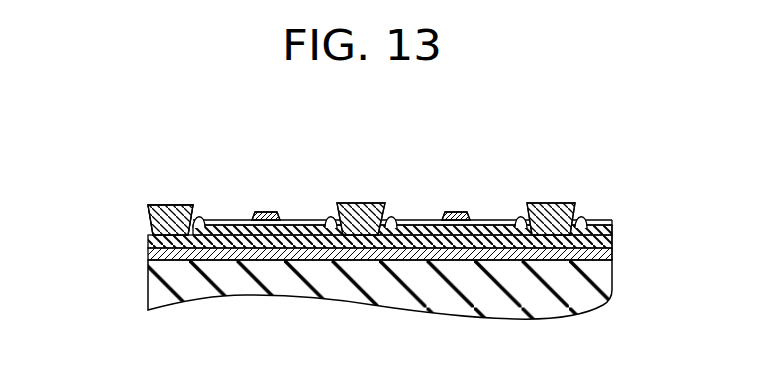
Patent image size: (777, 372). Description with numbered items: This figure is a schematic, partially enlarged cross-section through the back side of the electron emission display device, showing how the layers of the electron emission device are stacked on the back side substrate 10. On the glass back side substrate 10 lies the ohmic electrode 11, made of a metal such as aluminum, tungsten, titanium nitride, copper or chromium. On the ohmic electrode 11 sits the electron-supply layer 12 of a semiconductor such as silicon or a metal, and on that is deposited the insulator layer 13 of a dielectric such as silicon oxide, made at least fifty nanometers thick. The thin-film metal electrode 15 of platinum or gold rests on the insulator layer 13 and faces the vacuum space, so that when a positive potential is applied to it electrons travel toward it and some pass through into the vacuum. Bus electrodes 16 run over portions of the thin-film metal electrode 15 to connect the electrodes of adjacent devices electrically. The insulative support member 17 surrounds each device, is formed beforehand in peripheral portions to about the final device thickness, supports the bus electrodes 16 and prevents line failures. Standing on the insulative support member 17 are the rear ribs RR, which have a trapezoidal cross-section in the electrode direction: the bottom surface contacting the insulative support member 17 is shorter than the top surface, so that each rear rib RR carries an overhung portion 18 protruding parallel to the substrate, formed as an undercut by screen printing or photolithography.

The back side substrate 10 is at (167, 276).
The ohmic electrode 11 is at (585, 253).
The electron-supply layer 12 is at (270, 239).
The insulator layer 13 is at (462, 229).
The thin-film metal electrode 15 is at (425, 219).
The bus electrode 16 is at (268, 211).
The insulative support member 17 is at (548, 204).
The overhung portion 18 is at (188, 186).
The rear rib RR is at (152, 215).